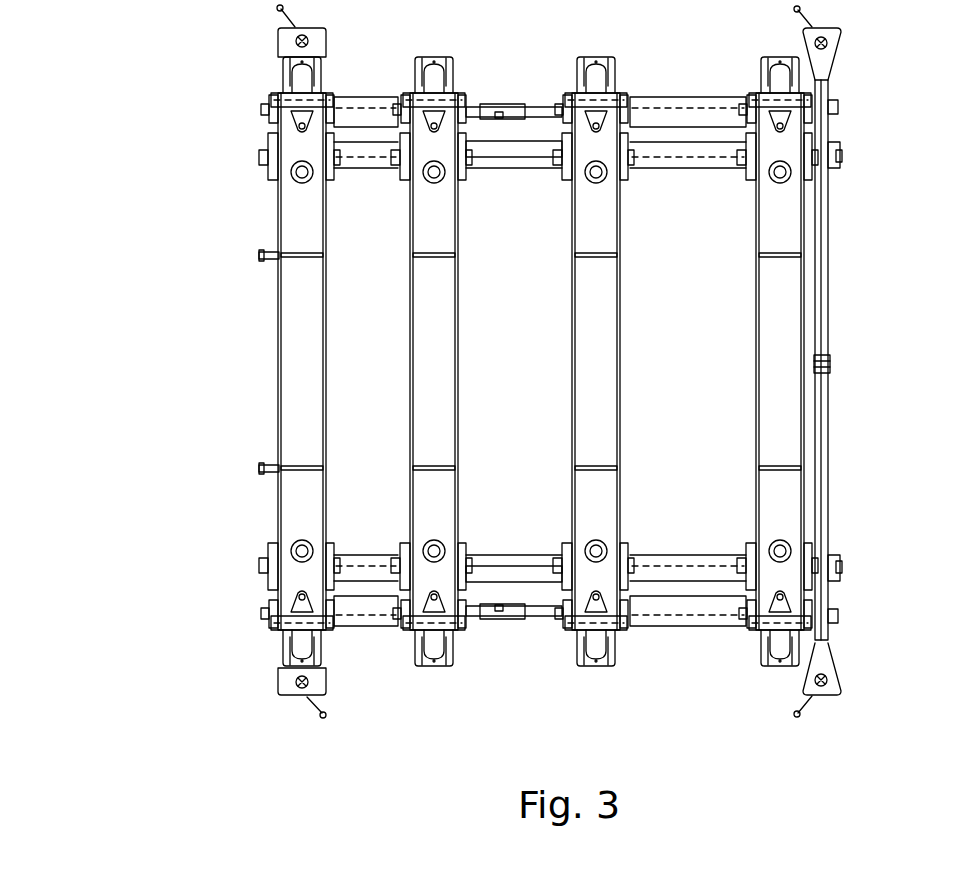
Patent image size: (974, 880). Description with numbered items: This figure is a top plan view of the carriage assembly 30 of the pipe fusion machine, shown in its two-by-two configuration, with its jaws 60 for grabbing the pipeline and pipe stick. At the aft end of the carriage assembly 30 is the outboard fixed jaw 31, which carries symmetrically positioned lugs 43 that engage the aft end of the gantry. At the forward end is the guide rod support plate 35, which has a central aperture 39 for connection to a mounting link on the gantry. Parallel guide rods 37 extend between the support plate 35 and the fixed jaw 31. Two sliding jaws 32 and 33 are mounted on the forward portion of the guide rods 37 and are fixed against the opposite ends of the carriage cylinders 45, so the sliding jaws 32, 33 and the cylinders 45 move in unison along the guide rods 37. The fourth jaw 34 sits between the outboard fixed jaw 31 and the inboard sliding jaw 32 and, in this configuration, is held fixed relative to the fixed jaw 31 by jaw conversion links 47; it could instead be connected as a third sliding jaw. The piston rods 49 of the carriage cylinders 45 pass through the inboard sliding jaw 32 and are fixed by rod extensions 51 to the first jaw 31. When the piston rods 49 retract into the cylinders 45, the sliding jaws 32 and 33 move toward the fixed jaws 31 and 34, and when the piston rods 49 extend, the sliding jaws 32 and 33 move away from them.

The carriage assembly 30 is at (112, 97).
The fixed jaw 31 is at (276, 404).
The sliding jaw 32 is at (570, 373).
The sliding jaw 33 is at (754, 373).
The fourth jaw 34 is at (408, 373).
The guide rod support plate 35 is at (830, 288).
The guide rods 37 is at (500, 165).
The central aperture 39 is at (831, 378).
The lugs 43 is at (262, 255).
The carriage cylinders 45 is at (690, 105).
The jaw conversion links 47 is at (358, 105).
The piston rods 49 is at (543, 108).
The rod extensions 51 is at (502, 106).
The jaws 60 is at (325, 662).